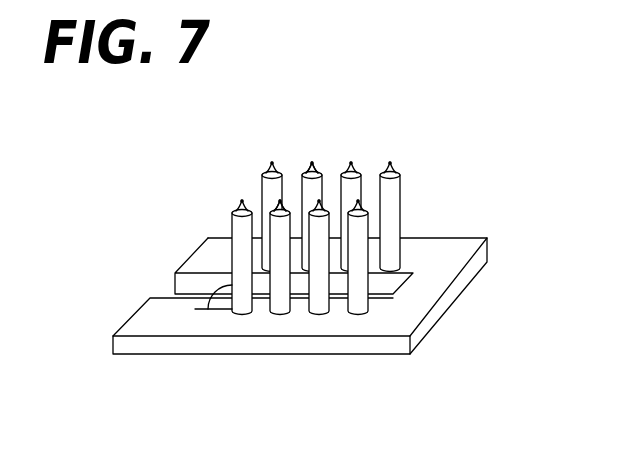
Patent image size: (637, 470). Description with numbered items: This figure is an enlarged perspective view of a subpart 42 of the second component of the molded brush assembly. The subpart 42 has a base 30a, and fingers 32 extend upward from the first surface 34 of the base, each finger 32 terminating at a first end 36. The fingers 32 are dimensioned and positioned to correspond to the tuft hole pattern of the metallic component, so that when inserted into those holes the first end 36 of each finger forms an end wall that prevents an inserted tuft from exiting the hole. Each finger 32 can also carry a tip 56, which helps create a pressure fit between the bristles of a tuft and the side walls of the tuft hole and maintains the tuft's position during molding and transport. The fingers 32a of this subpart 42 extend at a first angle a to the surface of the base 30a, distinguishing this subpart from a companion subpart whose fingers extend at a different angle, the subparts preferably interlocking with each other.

The base 30a is at (450, 295).
The first surface 34 is at (457, 250).
The fingers 32 is at (245, 302).
The fingers 32a is at (335, 195).
The first end 36 is at (266, 172).
The tip 56 is at (280, 209).
The subpart 42 is at (390, 366).
The first angle a is at (217, 285).